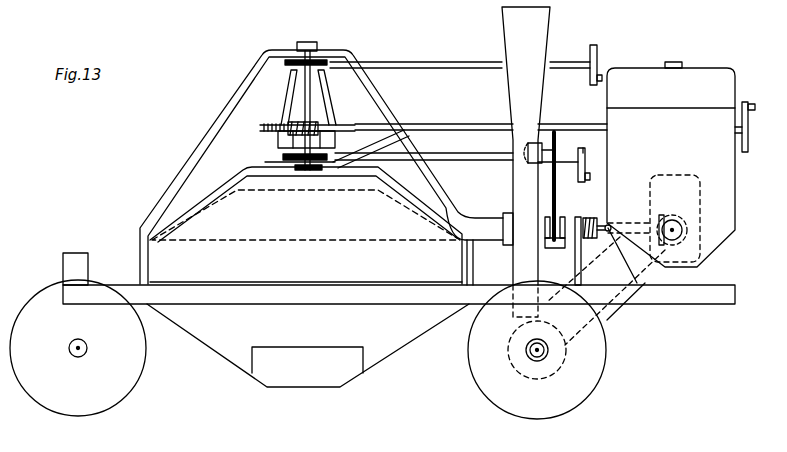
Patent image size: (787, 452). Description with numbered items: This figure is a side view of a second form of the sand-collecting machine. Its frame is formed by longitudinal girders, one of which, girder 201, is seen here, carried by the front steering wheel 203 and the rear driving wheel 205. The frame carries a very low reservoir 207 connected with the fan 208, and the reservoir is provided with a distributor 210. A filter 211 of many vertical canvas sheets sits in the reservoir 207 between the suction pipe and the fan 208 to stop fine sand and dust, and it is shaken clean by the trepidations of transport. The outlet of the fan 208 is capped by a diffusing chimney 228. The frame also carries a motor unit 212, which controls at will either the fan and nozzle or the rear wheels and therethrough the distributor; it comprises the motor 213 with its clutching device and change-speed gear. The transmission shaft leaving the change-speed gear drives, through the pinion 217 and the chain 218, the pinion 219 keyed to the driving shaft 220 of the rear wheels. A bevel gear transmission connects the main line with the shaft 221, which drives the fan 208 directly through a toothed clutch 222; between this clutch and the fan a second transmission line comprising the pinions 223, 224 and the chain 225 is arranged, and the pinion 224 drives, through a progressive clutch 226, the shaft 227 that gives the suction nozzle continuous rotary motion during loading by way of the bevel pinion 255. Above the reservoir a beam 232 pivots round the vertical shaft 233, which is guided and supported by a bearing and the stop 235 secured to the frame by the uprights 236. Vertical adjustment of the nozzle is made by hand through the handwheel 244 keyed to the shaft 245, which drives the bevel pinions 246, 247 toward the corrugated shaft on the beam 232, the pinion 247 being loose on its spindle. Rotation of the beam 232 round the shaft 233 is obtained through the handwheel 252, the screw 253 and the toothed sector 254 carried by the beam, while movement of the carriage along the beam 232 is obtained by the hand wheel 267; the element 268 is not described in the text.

The longitudinal girder 201 is at (213, 298).
The front steering wheel 203 is at (68, 407).
The rear driving wheel 205 is at (507, 397).
The reservoir 207 is at (388, 342).
The fan 208 is at (527, 195).
The distributor 210 is at (302, 377).
The filter 211 is at (197, 225).
The motor unit 212 is at (713, 232).
The motor 213 is at (690, 198).
The pinion 217 is at (672, 242).
The chain 218 is at (607, 320).
The pinion 219 is at (565, 347).
The driving shaft 220 is at (543, 357).
The shaft 221 is at (610, 226).
The toothed clutch 222 is at (597, 220).
The pinion 223 is at (553, 232).
The pinion 224 is at (560, 135).
The chain 225 is at (560, 190).
The progressive clutch 226 is at (525, 147).
The shaft 227 is at (457, 130).
The diffusing chimney 228 is at (538, 40).
The beam 232 is at (333, 123).
The vertical shaft 233 is at (305, 88).
The stop 235 is at (310, 43).
The upright 236 is at (196, 157).
The handwheel 244 is at (592, 58).
The shaft 245 is at (440, 63).
The bevel pinion 246 is at (333, 62).
The bevel pinion 247 is at (297, 62).
The handwheel 252 is at (742, 138).
The screw 253 is at (295, 125).
The toothed sector 254 is at (262, 127).
The bevel pinion 255 is at (333, 163).
The hand wheel 267 is at (583, 153).
The pulley disk 268 is at (305, 160).